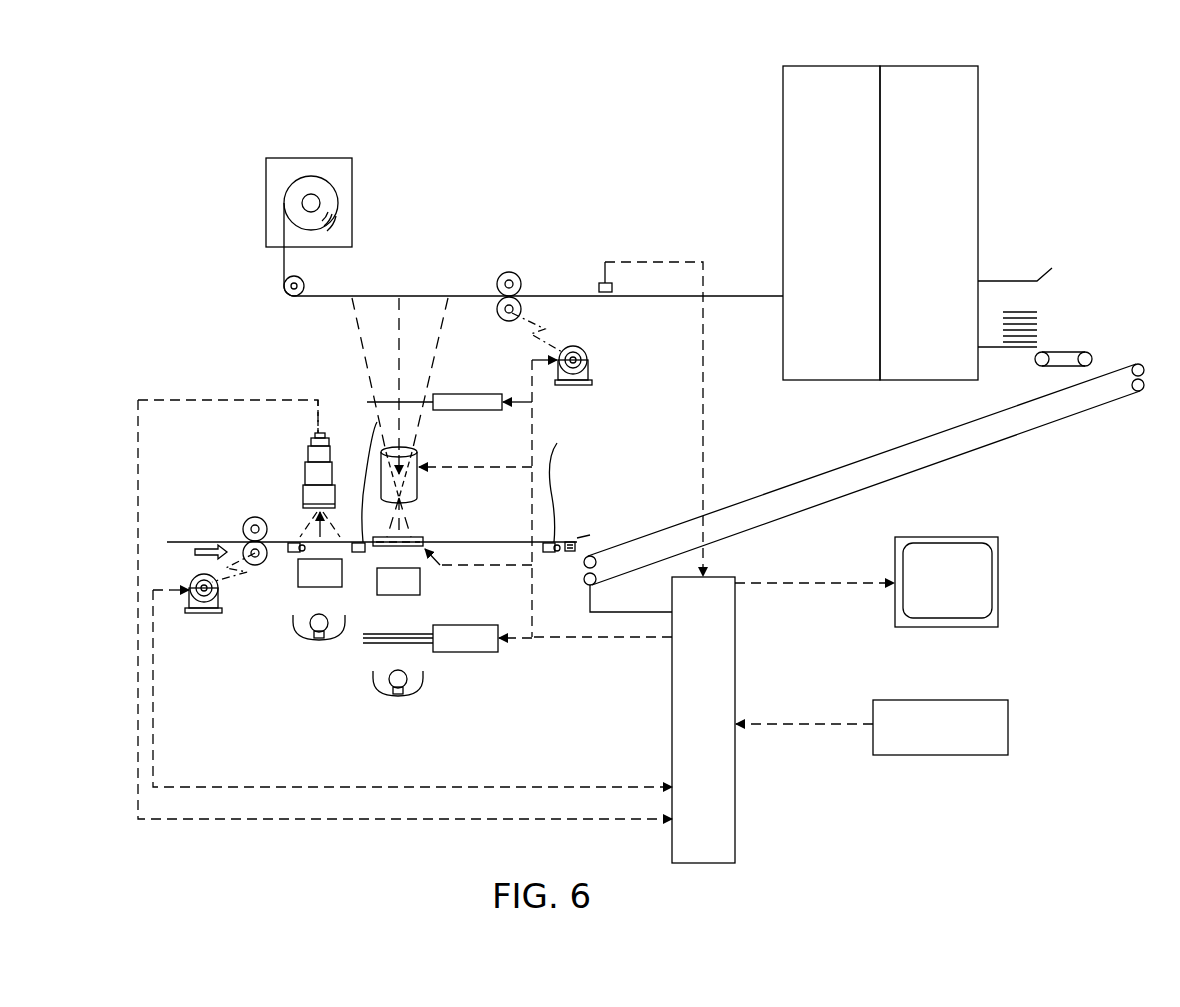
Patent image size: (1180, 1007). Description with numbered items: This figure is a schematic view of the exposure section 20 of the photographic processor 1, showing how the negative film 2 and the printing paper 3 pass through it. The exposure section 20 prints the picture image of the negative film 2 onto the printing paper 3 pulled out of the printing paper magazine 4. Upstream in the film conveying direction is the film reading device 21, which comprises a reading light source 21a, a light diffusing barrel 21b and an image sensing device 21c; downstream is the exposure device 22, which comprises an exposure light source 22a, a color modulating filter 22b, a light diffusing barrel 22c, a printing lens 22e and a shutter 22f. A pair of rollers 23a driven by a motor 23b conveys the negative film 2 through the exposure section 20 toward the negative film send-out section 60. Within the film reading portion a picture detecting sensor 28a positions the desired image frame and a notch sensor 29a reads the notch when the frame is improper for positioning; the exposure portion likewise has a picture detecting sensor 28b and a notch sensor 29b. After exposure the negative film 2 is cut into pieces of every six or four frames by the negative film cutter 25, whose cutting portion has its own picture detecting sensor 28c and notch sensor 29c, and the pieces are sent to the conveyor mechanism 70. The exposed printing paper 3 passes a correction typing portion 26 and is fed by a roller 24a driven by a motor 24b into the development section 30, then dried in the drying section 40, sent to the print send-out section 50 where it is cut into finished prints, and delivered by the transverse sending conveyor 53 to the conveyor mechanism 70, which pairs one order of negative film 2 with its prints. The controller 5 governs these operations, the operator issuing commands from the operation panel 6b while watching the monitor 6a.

The photographic processor 1 is at (1053, 96).
The negative film 2 is at (225, 535).
The printing paper 3 is at (430, 297).
The printing paper magazine 4 is at (352, 202).
The controller 5 is at (737, 797).
The monitor 6a is at (978, 535).
The operation panel 6b is at (1008, 710).
The exposure section 20 is at (347, 400).
The film reading device 21 is at (307, 668).
The reading light source 21a is at (295, 635).
The light diffusing barrel 21b is at (296, 582).
The image sensing device 21c is at (310, 452).
The exposure device 22 is at (383, 724).
The exposure light source 22a is at (423, 682).
The color modulating filter 22b is at (482, 652).
The light diffusing barrel 22c is at (420, 583).
The printing lens 22e is at (410, 445).
The shutter 22f is at (367, 400).
The pair of rollers 23a is at (245, 553).
The motor 23b is at (212, 613).
The roller 24a is at (513, 322).
The motor 24b is at (577, 388).
The negative film cutter 25 is at (566, 540).
The correction typing portion 26 is at (600, 260).
The picture detecting sensor 28a is at (297, 541).
The picture detecting sensor 28b is at (357, 553).
The picture detecting sensor 28c is at (546, 542).
The notch sensor 29a is at (294, 542).
The notch sensor 29b is at (347, 471).
The notch sensor 29c is at (579, 486).
The development section 30 is at (782, 110).
The drying section 40 is at (980, 169).
The print send-out section 50 is at (1023, 261).
The transverse sending conveyor 53 is at (1067, 352).
The negative film send-out section 60 is at (603, 516).
The conveyor mechanism 70 is at (847, 461).